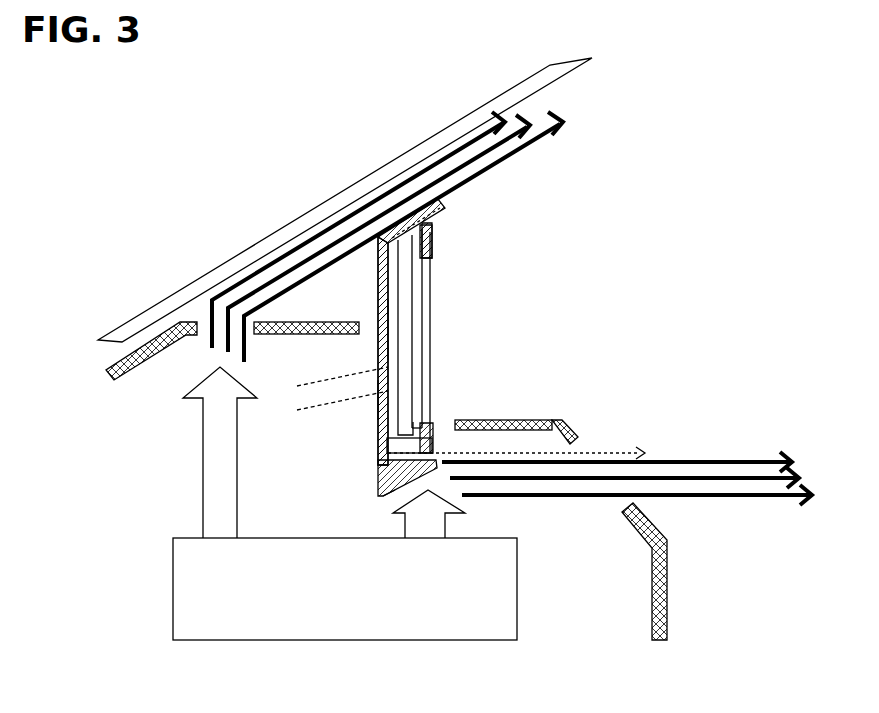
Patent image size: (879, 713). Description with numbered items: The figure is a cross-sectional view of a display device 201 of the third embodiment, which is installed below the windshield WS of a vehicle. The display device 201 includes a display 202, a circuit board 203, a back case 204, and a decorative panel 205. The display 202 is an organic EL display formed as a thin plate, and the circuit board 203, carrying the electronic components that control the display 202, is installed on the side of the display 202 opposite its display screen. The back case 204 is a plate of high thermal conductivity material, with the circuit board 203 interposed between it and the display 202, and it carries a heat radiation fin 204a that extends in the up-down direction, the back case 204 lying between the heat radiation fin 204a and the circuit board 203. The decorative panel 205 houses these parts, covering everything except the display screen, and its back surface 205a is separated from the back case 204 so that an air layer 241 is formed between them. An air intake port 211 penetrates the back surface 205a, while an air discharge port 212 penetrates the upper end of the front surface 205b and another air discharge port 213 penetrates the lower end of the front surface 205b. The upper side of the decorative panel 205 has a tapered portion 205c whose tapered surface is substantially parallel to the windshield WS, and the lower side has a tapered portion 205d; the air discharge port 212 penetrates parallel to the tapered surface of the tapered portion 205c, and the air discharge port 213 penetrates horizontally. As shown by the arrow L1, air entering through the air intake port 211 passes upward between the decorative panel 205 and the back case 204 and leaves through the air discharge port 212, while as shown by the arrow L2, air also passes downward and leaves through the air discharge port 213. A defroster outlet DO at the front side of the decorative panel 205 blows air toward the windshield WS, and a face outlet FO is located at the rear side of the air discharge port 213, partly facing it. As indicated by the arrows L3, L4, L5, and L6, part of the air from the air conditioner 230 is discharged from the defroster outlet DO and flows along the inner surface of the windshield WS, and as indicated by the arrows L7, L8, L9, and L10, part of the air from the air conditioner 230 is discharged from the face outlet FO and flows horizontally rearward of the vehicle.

The windshield WS is at (300, 218).
The defroster outlet DO is at (203, 318).
The air layer 241 is at (305, 336).
The arrow L4 is at (433, 165).
The arrow L5 is at (483, 130).
The arrow L6 is at (548, 118).
The arrow L3 is at (203, 468).
The air conditioner 230 is at (517, 603).
The arrow L7 is at (455, 518).
The decorative panel 205 is at (380, 466).
The back surface 205a is at (378, 305).
The front surface 205b is at (438, 242).
The tapered portion 205c is at (447, 204).
The tapered portion 205d is at (380, 490).
The air discharge port 212 is at (455, 212).
The heat radiation fin 204a is at (398, 297).
The display 202 is at (432, 352).
The circuit board 203 is at (432, 377).
The back case 204 is at (430, 397).
The air intake port 211 is at (380, 352).
The display device 201 is at (380, 410).
The air discharge port 213 is at (393, 478).
The arrow L1 is at (326, 382).
The arrow L2 is at (326, 406).
The face outlet FO is at (594, 448).
The arrow L8 is at (722, 458).
The arrow L9 is at (770, 475).
The arrow L10 is at (808, 490).